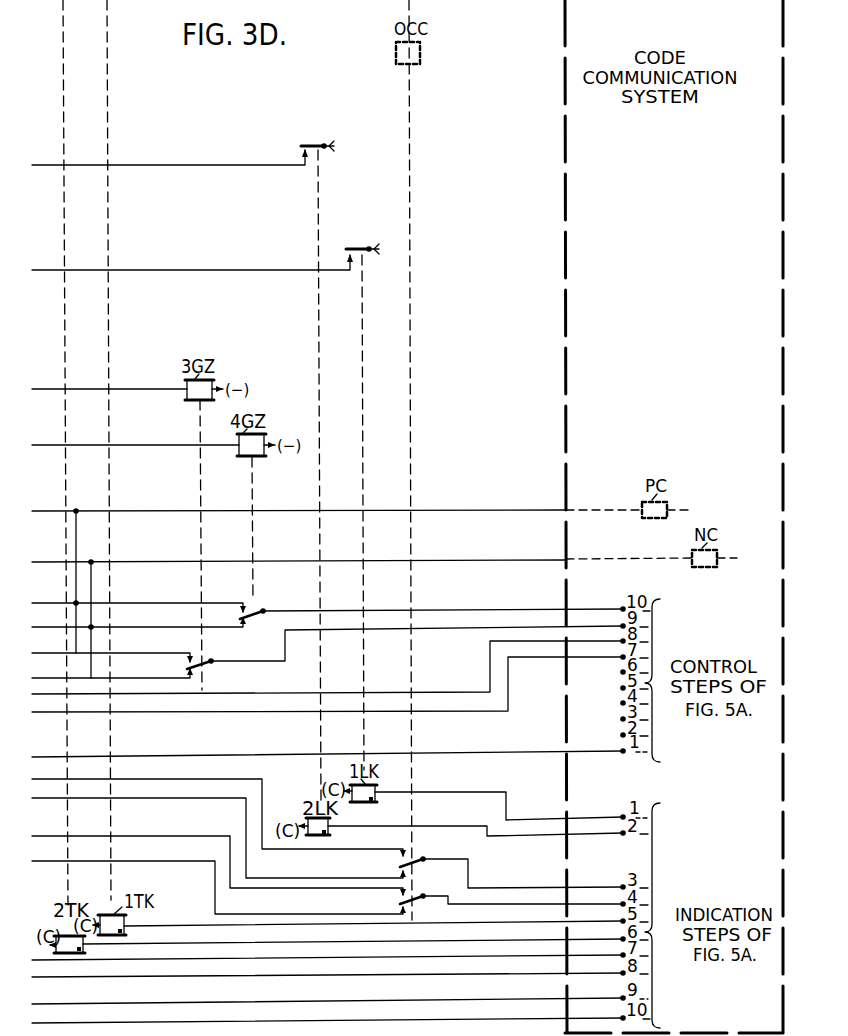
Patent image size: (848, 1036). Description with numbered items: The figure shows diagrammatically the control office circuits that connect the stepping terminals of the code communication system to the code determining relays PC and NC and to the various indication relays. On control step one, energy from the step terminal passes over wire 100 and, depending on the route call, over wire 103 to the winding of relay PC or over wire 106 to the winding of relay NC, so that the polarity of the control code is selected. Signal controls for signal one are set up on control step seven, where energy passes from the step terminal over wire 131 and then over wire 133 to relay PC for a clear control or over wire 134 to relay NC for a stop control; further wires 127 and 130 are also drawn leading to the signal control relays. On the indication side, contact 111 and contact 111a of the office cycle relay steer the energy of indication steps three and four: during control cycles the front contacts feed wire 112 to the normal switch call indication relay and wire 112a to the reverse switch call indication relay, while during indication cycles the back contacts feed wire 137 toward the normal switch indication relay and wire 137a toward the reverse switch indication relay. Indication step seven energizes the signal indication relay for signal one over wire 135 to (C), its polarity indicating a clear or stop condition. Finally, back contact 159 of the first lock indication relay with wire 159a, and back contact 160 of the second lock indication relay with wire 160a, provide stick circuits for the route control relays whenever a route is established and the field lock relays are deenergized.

The wire 160a is at (33, 167).
The wire 159a is at (33, 272).
The back contact of relay 2LK 160 is at (312, 150).
The back contact of relay 1LK 159 is at (357, 253).
The wire to relay 3GZ 127 is at (40, 390).
The wire to relay 4GZ 130 is at (40, 447).
The wire 103 is at (34, 513).
The wire 106 is at (34, 564).
The wire 133 is at (34, 605).
The wire 134 is at (34, 629).
The wire 131 is at (64, 711).
The wire 100 is at (62, 756).
The wire 112 is at (116, 779).
The wire 137 is at (65, 796).
The wire 112a is at (123, 836).
The wire 137a is at (125, 861).
The contact of relay OCC 111 is at (421, 863).
The contact of relay OCC 111a is at (417, 900).
The wire 135 is at (38, 962).